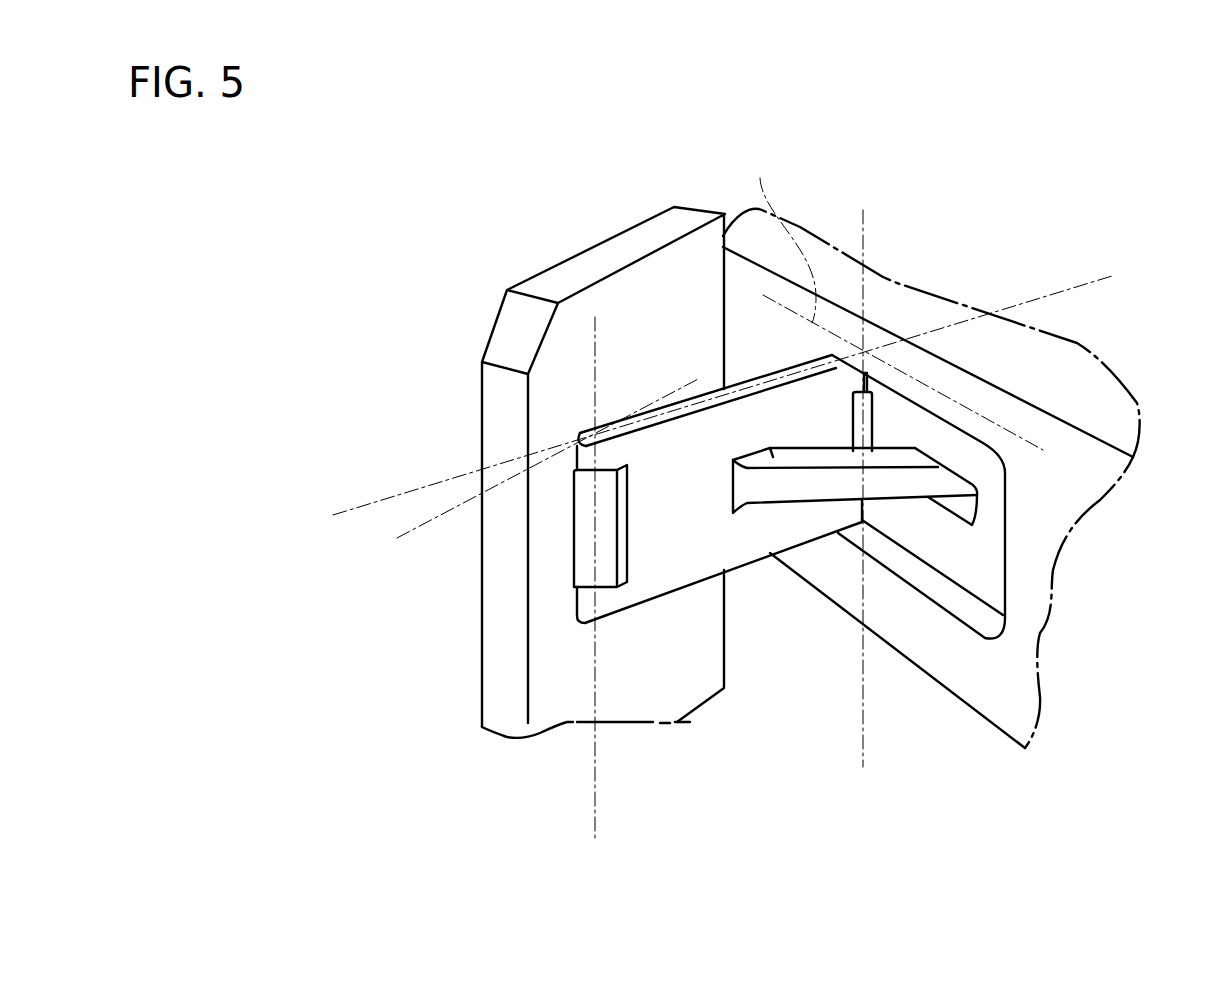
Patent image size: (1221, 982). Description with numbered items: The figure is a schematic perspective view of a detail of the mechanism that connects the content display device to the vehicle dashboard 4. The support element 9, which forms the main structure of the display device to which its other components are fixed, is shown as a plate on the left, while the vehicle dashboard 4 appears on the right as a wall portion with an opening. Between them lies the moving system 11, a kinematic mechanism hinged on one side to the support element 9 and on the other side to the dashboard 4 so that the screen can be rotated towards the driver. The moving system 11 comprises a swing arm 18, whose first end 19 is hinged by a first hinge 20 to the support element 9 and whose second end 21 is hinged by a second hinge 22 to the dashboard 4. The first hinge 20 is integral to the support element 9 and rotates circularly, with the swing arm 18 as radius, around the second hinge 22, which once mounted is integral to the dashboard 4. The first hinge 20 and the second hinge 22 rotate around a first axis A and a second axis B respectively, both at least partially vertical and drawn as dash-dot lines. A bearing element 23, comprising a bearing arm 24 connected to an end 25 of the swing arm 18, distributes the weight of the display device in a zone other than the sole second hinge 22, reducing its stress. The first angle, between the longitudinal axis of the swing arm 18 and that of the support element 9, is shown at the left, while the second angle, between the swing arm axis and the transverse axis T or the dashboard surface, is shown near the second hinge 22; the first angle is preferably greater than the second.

The vehicle dashboard 4 is at (1110, 403).
The support element 9 is at (647, 293).
The moving system 11 is at (991, 232).
The swing arm 18 is at (727, 563).
The first end 19 is at (630, 593).
The first hinge 20 is at (585, 533).
The second end 21 is at (878, 418).
The second hinge 22 is at (872, 441).
The bearing element 23 is at (953, 461).
The bearing arm 24 is at (898, 490).
The end of the swing arm 25 is at (753, 452).
The first axis A is at (595, 762).
The second axis B is at (863, 742).
The transverse axis T is at (760, 178).